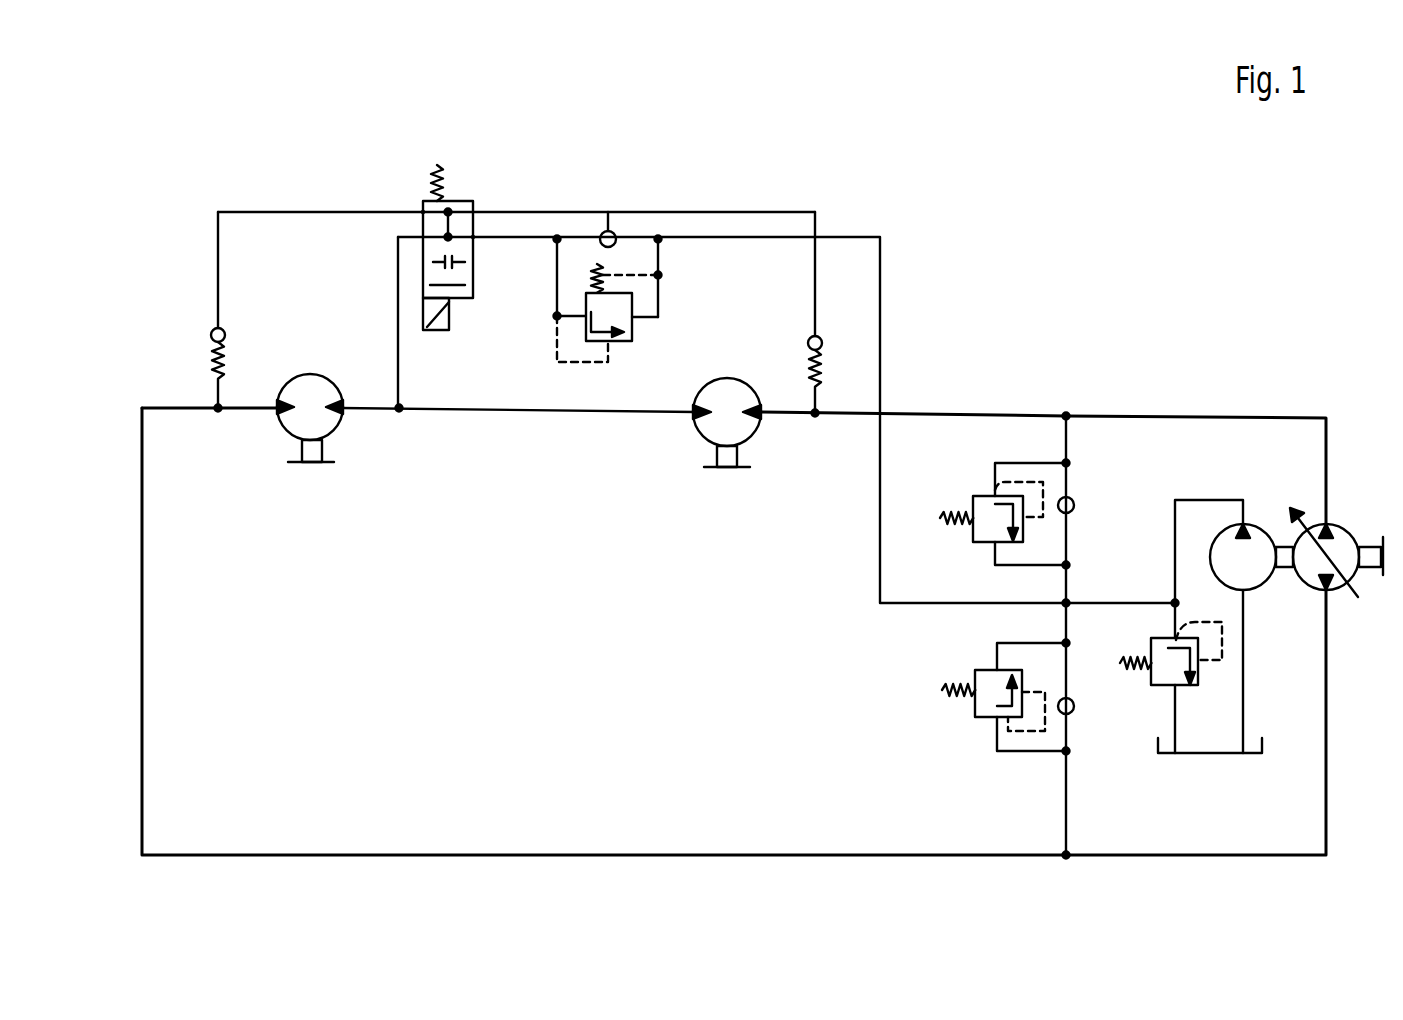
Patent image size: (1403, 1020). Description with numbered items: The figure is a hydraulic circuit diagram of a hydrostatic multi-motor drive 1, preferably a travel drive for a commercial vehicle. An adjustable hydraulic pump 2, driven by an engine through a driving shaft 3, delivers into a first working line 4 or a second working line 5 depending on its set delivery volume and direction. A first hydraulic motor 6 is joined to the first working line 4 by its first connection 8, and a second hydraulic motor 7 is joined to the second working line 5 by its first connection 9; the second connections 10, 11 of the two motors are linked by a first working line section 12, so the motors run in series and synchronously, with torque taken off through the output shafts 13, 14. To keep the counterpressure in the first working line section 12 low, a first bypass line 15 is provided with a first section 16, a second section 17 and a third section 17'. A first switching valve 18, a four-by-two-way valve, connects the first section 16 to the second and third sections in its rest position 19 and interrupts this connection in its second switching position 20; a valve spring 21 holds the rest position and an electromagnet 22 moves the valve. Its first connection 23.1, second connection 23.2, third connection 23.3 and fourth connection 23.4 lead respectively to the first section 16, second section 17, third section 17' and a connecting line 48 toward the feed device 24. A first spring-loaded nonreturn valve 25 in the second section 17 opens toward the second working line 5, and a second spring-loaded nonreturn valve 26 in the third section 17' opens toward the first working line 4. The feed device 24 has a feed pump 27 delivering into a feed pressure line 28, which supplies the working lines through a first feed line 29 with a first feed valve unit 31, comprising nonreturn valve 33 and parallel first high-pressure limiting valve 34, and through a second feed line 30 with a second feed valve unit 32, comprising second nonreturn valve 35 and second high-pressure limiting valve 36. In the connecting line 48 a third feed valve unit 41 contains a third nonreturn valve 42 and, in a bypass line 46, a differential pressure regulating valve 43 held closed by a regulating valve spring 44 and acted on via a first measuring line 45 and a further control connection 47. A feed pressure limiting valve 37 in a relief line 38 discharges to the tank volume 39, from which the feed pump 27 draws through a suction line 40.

The hydrostatic multi-motor drive 1 is at (1192, 283).
The adjustable hydraulic pump 2 is at (1340, 540).
The driving shaft 3 is at (1370, 570).
The first working line 4 is at (1155, 416).
The second working line 5 is at (1194, 855).
The first hydraulic motor 6 is at (738, 432).
The second hydraulic motor 7 is at (322, 423).
The first connection of the first hydraulic motor 8 is at (763, 420).
The first connection of the second hydraulic motor 9 is at (278, 416).
The second connection of the first hydraulic motor 10 is at (692, 422).
The second connection of the second hydraulic motor 11 is at (352, 414).
The first working line section 12 is at (432, 412).
The output shaft of the first hydraulic motor 13 is at (728, 476).
The output shaft of the second hydraulic motor 14 is at (313, 470).
The first bypass line 15 is at (267, 196).
The first section 16 is at (396, 338).
The second section 17 is at (189, 270).
The third section 17' is at (764, 241).
The first switching valve 18 is at (478, 188).
The rest position 19 is at (458, 222).
The second switching position 20 is at (432, 276).
The valve spring 21 is at (435, 162).
The electromagnet 22 is at (438, 330).
The first connection 23.1 is at (400, 240).
The second connection 23.2 is at (425, 205).
The third connection 23.3 is at (476, 210).
The fourth connection 23.4 is at (478, 242).
The feed device 24 is at (1242, 448).
The first spring-loaded nonreturn valve 25 is at (211, 341).
The second spring-loaded nonreturn valve 26 is at (806, 347).
The feed pump 27 is at (1255, 575).
The feed pressure line 28 is at (1208, 500).
The first feed line 29 is at (1068, 442).
The second feed line 30 is at (1068, 802).
The first feed valve unit 31 is at (952, 545).
The second feed valve unit 32 is at (968, 742).
The nonreturn valve 33 is at (1075, 505).
The first high-pressure limiting valve 34 is at (970, 502).
The second nonreturn valve 35 is at (1075, 710).
The second high-pressure limiting valve 36 is at (975, 712).
The feed pressure limiting valve 37 is at (1150, 676).
The relief line 38 is at (1178, 720).
The tank volume 39 is at (1250, 762).
The suction line 40 is at (1245, 690).
The third feed valve unit 41 is at (613, 385).
The third nonreturn valve 42 is at (610, 228).
The differential pressure regulating valve 43 is at (622, 323).
The regulating valve spring 44 is at (586, 273).
The first measuring line 45 is at (612, 360).
The bypass line 46 is at (660, 314).
The control line 47 is at (660, 282).
The connecting line 48 is at (882, 292).